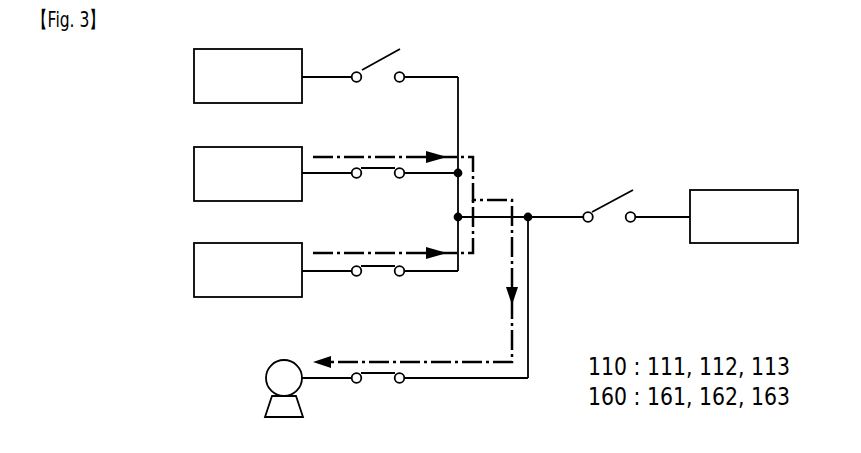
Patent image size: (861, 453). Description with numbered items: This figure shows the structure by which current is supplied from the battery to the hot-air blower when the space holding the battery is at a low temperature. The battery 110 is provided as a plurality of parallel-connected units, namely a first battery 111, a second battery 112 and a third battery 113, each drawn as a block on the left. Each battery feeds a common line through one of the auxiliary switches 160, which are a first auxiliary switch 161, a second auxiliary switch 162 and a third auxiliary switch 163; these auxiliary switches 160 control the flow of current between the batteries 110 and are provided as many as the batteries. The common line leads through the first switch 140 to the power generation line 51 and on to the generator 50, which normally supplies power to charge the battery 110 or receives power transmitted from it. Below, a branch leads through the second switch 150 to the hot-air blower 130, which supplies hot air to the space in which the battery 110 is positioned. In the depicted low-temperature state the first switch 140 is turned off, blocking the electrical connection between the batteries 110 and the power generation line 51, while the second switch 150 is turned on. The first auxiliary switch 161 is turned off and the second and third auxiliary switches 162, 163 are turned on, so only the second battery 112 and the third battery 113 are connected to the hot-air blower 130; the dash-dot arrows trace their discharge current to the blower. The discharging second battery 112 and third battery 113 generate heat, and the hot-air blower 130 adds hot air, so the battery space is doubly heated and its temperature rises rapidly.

The generator 50 is at (743, 247).
The power generation line 51 is at (663, 219).
The battery 110 is at (235, 173).
The first battery 111 is at (194, 75).
The second battery 112 is at (194, 171).
The third battery 113 is at (194, 268).
The hot-air blower 130 is at (266, 378).
The first switch 140 is at (608, 222).
The second switch 150 is at (377, 383).
The auxiliary switch 160 is at (405, 190).
The first auxiliary switch 161 is at (377, 80).
The second auxiliary switch 162 is at (378, 178).
The third auxiliary switch 163 is at (378, 277).